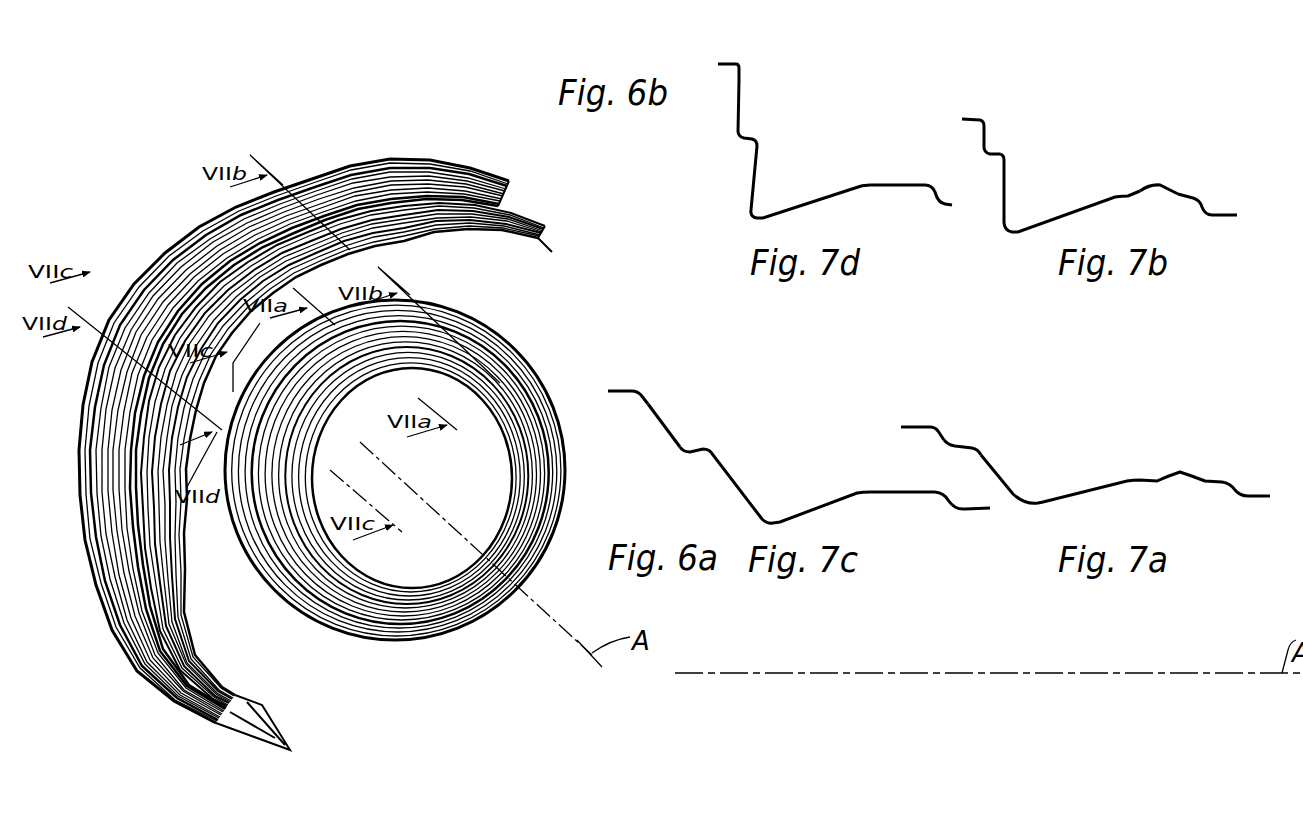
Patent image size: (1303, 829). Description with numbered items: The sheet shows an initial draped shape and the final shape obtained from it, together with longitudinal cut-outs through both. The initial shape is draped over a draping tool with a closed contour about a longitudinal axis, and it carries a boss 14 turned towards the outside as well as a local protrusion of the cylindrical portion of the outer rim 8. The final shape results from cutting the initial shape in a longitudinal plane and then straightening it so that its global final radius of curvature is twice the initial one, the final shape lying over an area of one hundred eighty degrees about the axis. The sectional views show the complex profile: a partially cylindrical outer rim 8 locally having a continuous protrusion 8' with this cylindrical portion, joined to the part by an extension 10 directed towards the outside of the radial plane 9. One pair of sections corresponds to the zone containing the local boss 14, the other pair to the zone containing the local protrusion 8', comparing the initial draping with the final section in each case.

In FIG. 7b, the partially cylindrical outer rim 8 is at (979, 103).
In FIG. 7a, the partially cylindrical outer rim 8 is at (922, 410).
In FIG. 7d, the continuous protrusion 8' is at (713, 47).
In FIG. 7c, the continuous protrusion 8' is at (631, 374).
In FIG. 7b, the radial plane 9 is at (987, 131).
In FIG. 7a, the radial plane 9 is at (938, 434).
In FIG. 7d, the extension 10 is at (739, 100).
In FIG. 7c, the extension 10 is at (660, 420).
In FIG. 7b, the boss 14 is at (1152, 184).